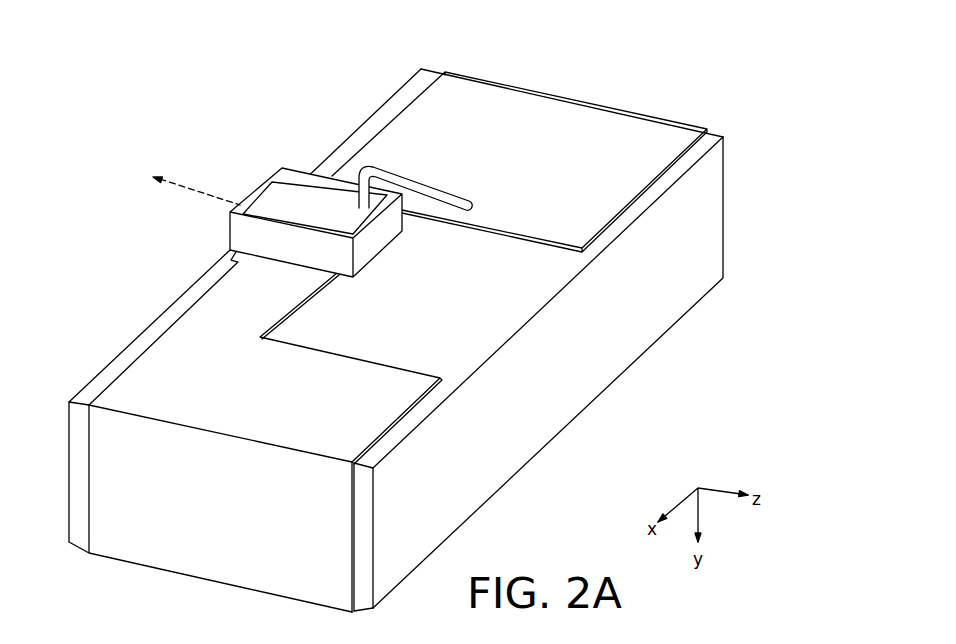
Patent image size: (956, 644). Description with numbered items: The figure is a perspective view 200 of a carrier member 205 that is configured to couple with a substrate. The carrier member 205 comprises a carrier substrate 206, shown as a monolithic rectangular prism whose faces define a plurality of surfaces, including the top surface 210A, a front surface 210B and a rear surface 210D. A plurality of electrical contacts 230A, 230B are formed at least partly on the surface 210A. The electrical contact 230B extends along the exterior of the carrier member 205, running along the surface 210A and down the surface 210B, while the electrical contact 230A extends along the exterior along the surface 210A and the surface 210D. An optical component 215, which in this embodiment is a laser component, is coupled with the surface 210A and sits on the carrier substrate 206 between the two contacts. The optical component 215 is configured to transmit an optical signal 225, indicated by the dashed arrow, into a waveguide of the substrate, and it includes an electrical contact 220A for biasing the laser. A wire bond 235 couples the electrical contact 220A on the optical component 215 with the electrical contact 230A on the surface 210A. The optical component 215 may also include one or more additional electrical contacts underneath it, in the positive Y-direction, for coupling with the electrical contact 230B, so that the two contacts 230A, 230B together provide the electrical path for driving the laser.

The view 200 is at (143, 142).
The carrier member 205 is at (672, 378).
The carrier substrate 206 is at (718, 216).
The surface 210A is at (458, 306).
The surface 210B is at (365, 492).
The surface 210D is at (680, 108).
The optical component 215 is at (295, 168).
The electrical contact 220A is at (272, 210).
The optical signal 225 is at (203, 190).
The electrical contact 230A is at (550, 147).
The electrical contact 230B is at (276, 412).
The wire bond 235 is at (417, 183).